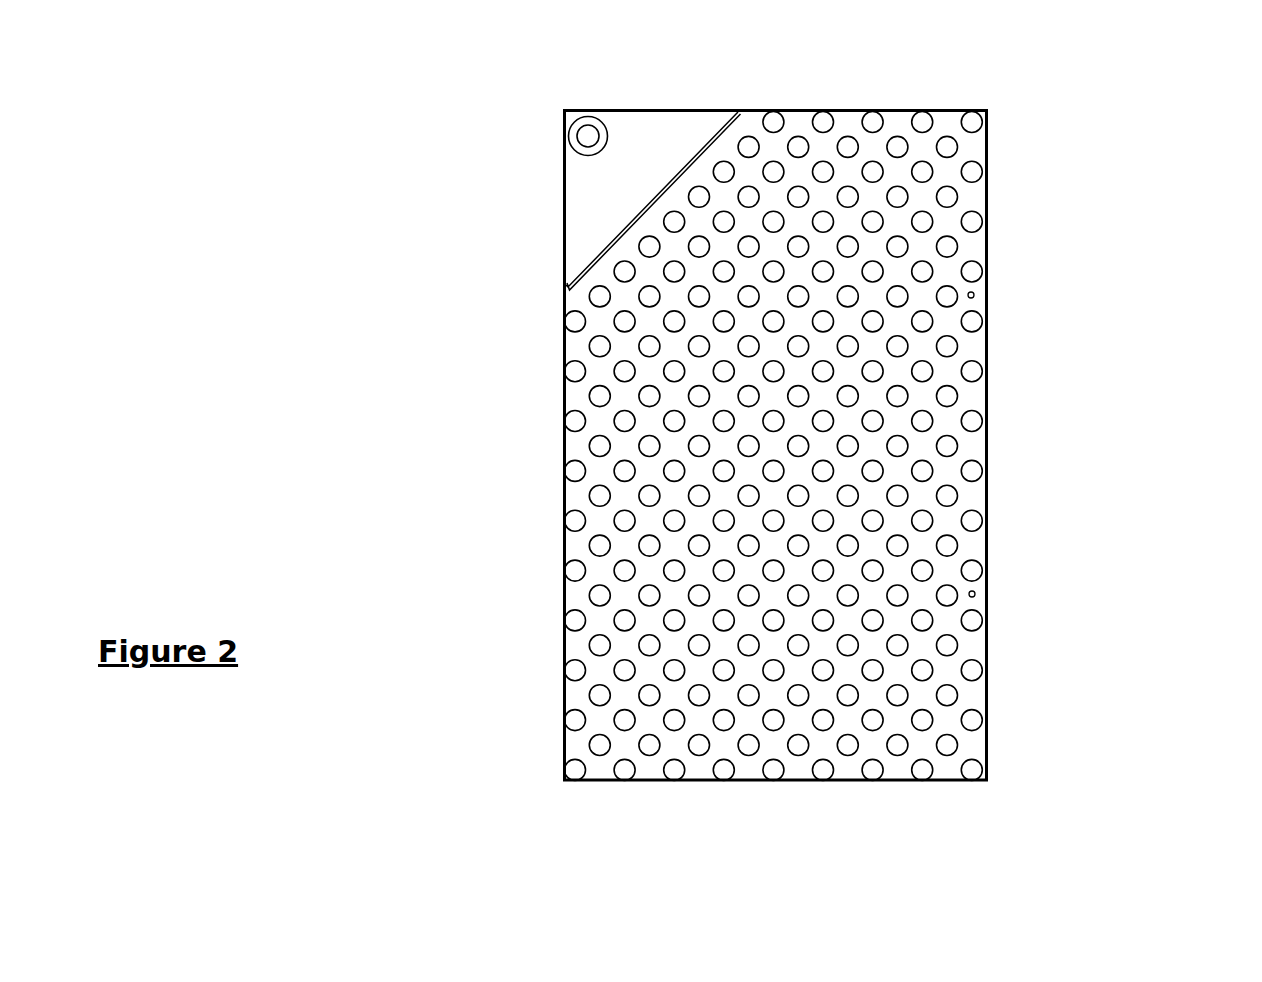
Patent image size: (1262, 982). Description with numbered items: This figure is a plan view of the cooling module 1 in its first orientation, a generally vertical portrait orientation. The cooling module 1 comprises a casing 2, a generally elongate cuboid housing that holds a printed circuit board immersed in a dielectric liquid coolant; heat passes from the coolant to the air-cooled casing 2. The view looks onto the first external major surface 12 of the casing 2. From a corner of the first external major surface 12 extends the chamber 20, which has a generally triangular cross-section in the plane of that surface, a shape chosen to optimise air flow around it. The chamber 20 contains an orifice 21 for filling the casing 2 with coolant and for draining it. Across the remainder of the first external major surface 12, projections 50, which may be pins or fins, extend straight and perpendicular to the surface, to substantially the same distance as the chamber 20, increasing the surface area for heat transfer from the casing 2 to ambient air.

The cooling module 1 is at (1100, 179).
The casing 2 is at (546, 647).
The first external major surface 12 is at (845, 124).
The chamber 20 is at (660, 128).
The orifice 21 is at (588, 137).
The projections 50 is at (572, 471).